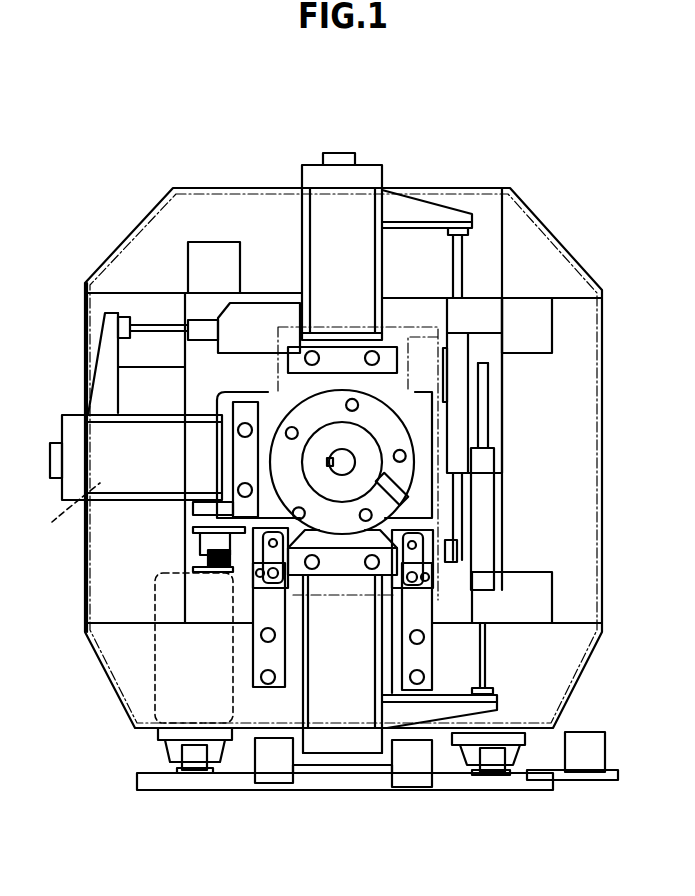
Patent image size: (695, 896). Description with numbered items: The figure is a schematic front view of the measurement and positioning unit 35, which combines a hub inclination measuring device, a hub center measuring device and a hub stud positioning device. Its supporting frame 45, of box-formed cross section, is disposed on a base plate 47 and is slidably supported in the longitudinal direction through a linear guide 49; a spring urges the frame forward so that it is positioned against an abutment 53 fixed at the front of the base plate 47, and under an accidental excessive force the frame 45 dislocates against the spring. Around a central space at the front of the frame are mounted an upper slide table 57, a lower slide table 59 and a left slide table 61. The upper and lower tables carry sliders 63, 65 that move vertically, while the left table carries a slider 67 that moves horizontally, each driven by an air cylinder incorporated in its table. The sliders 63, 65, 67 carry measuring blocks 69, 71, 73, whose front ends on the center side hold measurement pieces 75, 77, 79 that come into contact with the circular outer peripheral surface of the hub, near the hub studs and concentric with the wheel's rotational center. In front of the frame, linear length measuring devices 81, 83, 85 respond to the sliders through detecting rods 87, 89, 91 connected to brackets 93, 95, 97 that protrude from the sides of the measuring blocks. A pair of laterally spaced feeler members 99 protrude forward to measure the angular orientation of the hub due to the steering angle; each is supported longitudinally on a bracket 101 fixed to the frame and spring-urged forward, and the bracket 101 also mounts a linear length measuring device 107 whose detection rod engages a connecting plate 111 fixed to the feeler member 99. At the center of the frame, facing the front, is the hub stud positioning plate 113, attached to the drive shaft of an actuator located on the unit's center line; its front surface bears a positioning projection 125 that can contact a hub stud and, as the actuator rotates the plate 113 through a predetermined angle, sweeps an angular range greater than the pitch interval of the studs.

The measurement and positioning unit 35 is at (343, 432).
The supporting frame 45 is at (263, 203).
The base plate 47 is at (160, 783).
The linear guide 49 is at (195, 762).
The abutment 53 is at (270, 782).
The upper slide table 57 is at (360, 207).
The lower slide table 59 is at (360, 720).
The left slide table 61 is at (63, 507).
The slider 63 is at (312, 172).
The slider 65 is at (313, 747).
The slider 67 is at (72, 432).
The measuring block 69 is at (365, 228).
The measuring block 71 is at (320, 702).
The measuring block 73 is at (102, 430).
The measurement piece 75 is at (332, 373).
The measurement piece 77 is at (348, 570).
The measurement piece 79 is at (247, 410).
The linear length measuring device 81 is at (460, 383).
The linear length measuring device 83 is at (482, 497).
The linear length measuring device 85 is at (207, 327).
The detecting rod 87 is at (462, 258).
The detecting rod 89 is at (487, 672).
The detecting rod 91 is at (142, 322).
The bracket 93 is at (440, 213).
The bracket 95 is at (445, 712).
The bracket 97 is at (105, 347).
The feeler member 99 is at (262, 550).
The bracket 101 is at (260, 655).
The linear length measuring device 107 is at (250, 578).
The connecting plate 111 is at (262, 558).
The hub stud positioning plate 113 is at (363, 402).
The positioning projection 125 is at (383, 483).